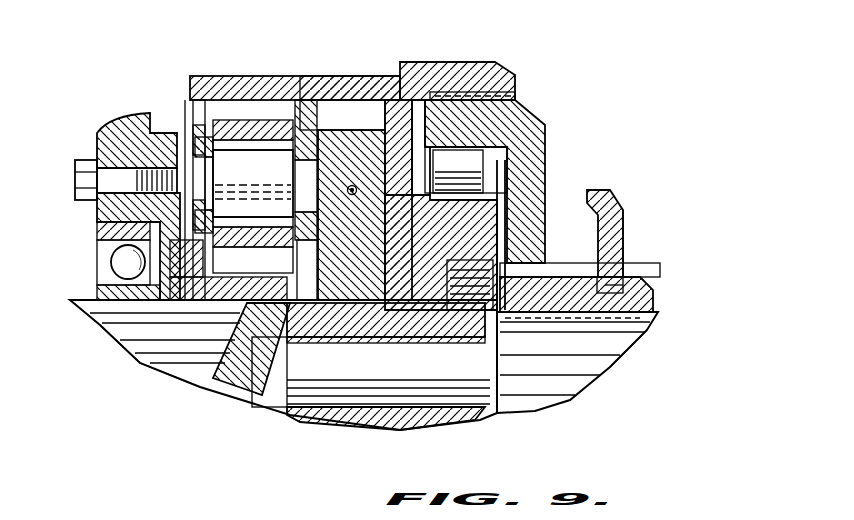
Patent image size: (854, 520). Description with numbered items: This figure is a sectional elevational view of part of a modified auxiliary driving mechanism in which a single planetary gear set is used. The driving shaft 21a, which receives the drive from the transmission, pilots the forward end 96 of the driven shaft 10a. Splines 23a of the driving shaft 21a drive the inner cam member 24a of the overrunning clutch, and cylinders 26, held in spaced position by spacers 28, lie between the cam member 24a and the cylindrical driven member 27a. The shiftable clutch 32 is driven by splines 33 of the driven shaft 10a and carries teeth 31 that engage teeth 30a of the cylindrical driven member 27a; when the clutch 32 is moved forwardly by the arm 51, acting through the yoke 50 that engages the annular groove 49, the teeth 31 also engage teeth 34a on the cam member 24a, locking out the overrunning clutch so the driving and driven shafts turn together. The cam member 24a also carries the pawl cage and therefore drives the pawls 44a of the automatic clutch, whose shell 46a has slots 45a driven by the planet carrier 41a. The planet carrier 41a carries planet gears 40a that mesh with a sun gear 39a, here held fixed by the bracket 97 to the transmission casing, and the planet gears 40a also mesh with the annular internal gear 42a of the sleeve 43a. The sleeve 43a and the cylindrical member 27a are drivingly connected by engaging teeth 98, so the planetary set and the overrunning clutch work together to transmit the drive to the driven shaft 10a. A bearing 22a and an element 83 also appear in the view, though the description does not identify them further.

The bracket 97 is at (158, 146).
The ball bearing 22a is at (118, 258).
The planet gears 40a is at (205, 125).
The planet carrier 41a is at (316, 133).
The annular internal gear 42a is at (204, 171).
The sleeve 43a is at (322, 76).
The slots 45a is at (344, 112).
The pawls 44a is at (364, 140).
The shell 46a is at (400, 158).
The center block 83 is at (362, 165).
The engaging teeth 98 is at (518, 93).
The cylindrical driven member 27a is at (498, 154).
The spacers 28 is at (505, 176).
The cylinders 26 is at (445, 197).
The teeth 34a is at (470, 290).
The teeth 31 is at (566, 274).
The shiftable clutch 32 is at (640, 300).
The teeth 30a is at (530, 262).
The arm 51 is at (612, 196).
The yoke 50 is at (616, 262).
The annular groove 49 is at (622, 282).
The driven shaft 10a is at (596, 387).
The splines 33 is at (615, 360).
The driving shaft 21a is at (148, 355).
The splines 23a is at (108, 315).
The sun gear 39a is at (285, 330).
The cam member 24a is at (405, 290).
The forward end 96 is at (335, 395).